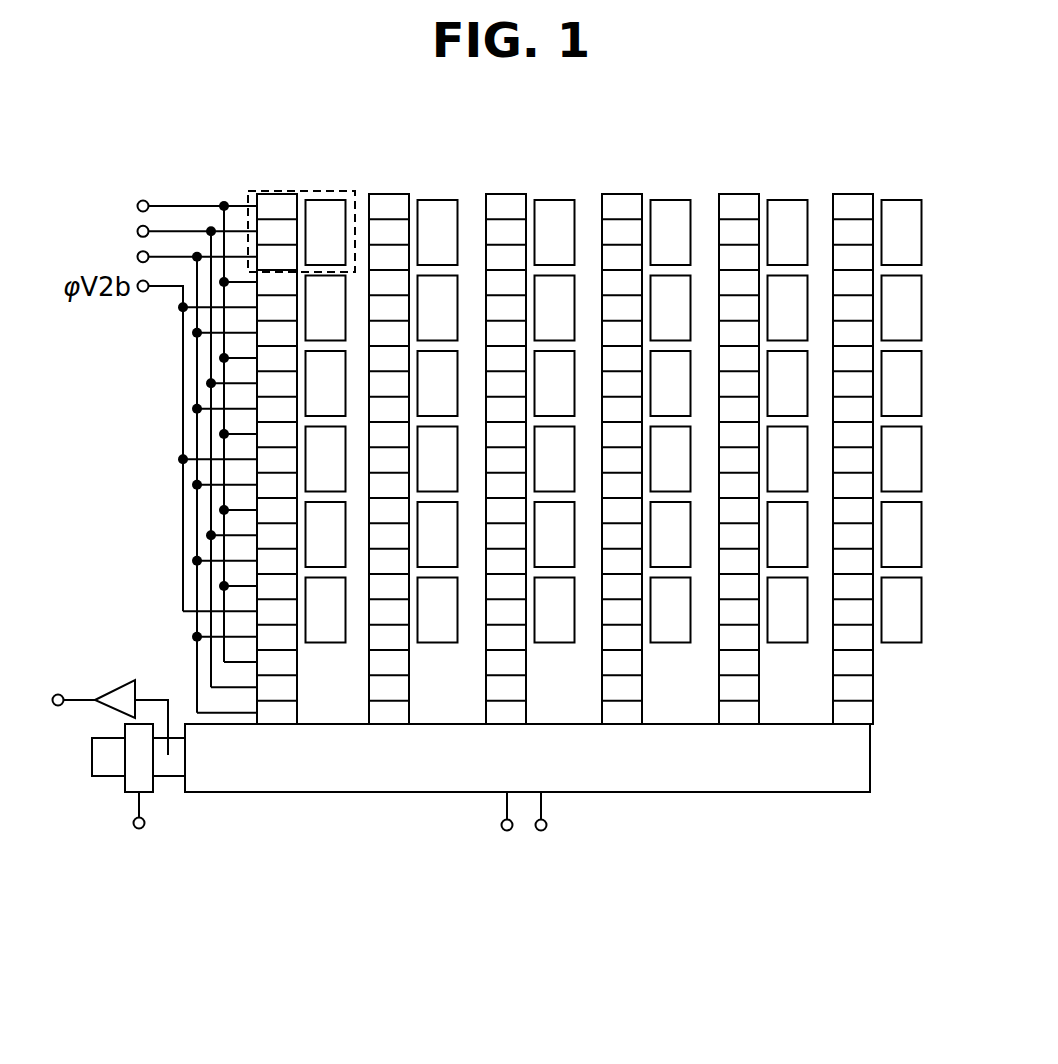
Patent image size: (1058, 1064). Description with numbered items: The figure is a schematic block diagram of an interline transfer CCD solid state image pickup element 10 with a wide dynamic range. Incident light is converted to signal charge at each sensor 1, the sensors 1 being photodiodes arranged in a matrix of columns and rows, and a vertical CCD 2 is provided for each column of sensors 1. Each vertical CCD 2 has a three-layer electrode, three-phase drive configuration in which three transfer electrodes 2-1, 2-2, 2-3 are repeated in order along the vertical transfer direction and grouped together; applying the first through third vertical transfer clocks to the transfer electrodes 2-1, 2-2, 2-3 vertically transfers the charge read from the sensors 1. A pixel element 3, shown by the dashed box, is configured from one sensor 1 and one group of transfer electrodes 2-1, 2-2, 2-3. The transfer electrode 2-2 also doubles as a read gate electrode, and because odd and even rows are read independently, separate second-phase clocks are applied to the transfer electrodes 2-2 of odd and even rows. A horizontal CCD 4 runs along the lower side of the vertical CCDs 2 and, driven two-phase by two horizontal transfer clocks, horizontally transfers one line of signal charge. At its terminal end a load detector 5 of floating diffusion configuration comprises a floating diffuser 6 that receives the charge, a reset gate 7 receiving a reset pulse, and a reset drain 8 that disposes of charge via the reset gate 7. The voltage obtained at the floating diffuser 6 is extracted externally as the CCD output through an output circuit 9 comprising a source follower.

The sensor 1 is at (323, 212).
The vertical CCD 2 is at (538, 194).
The transfer electrode 2-1 is at (258, 206).
The transfer electrode 2-2 is at (270, 230).
The transfer electrode 2-3 is at (270, 257).
The pixel element 3 is at (355, 191).
The horizontal CCD 4 is at (746, 776).
The load detector 5 is at (208, 814).
The floating diffuser 6 is at (166, 769).
The reset gate 7 is at (138, 776).
The reset drain 8 is at (103, 754).
The output circuit 9 is at (120, 692).
The CCD solid state image pickup element 10 is at (832, 180).